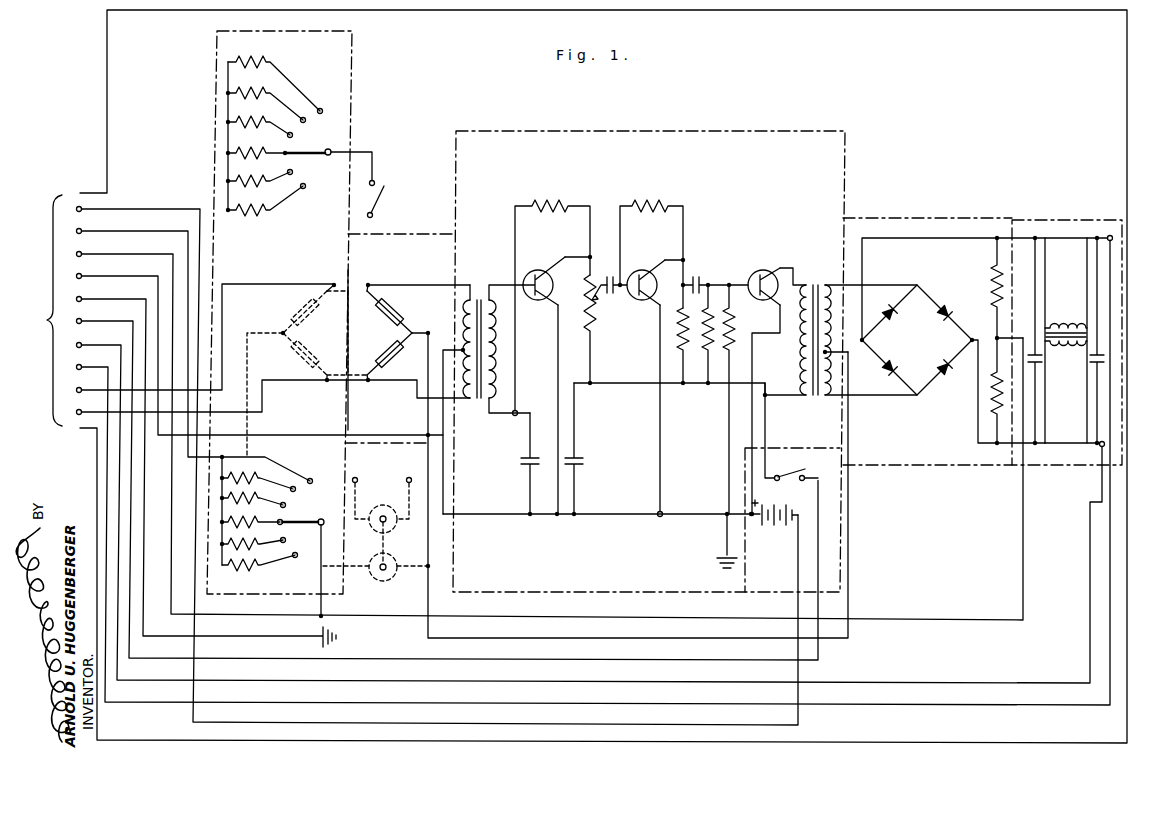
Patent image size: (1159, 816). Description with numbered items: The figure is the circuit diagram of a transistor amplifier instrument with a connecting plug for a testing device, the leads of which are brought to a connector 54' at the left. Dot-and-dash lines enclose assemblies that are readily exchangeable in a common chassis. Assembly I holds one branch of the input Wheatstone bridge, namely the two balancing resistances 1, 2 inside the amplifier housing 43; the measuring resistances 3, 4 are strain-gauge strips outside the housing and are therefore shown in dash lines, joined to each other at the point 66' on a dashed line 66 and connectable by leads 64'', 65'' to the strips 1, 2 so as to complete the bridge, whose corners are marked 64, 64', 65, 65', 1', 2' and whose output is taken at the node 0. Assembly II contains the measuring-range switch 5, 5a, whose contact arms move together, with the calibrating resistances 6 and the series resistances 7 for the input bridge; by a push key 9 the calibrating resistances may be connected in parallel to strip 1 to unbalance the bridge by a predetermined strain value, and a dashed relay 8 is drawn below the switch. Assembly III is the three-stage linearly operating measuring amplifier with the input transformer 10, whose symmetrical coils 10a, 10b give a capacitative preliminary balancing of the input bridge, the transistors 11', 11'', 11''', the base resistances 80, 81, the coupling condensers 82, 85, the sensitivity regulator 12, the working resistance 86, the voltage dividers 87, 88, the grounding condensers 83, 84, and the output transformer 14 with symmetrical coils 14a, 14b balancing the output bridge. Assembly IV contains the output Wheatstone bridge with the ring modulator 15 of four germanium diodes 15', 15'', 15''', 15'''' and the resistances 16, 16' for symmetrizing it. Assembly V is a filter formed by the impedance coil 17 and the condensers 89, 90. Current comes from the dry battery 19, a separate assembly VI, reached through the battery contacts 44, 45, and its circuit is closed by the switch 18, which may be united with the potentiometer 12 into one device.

The amplifier housing 43 is at (107, 68).
The terminal strip 54' is at (55, 310).
The input transformer 10 is at (492, 294).
The push key 9 is at (391, 192).
The terminal 8 / relay 8 is at (387, 596).
The series resistances 7 is at (250, 537).
The calibrating resistances 6 is at (262, 76).
The measuring-range switch 5 is at (298, 517).
The measuring resistance 4 is at (292, 360).
The measuring resistance 3 is at (290, 312).
The balancing resistance 2 is at (237, 341).
The balancing resistance 1 is at (266, 355).
The assembly I is at (442, 234).
The assembly II is at (352, 50).
The assembly III is at (526, 131).
The assembly IV is at (931, 218).
The assembly V is at (1058, 220).
The assembly VI is at (836, 548).
The measuring-range switch 5a is at (306, 152).
The bridge terminal 64 is at (332, 332).
The bridge connection 64' is at (321, 274).
The lead 64'' is at (361, 312).
The bridge terminal 65 is at (358, 398).
The bridge connection 65' is at (325, 391).
The lead 65'' is at (334, 354).
The bridge node 1' is at (418, 274).
The bridge node 2' is at (375, 390).
The bridge output node 0 is at (630, 475).
The connection line 66 is at (260, 382).
The connection point 66' is at (268, 346).
The coil of input transformer 10a is at (478, 291).
The coil of input transformer 10b is at (465, 411).
The transistor 11' is at (556, 375).
The transistor 11'' is at (655, 376).
The transistor 11''' is at (777, 376).
The base resistance 80 is at (552, 206).
The base resistance 81 is at (644, 206).
The coupling condenser 82 is at (602, 276).
The coupling condenser 85 is at (708, 276).
The sensitivity regulator 12 is at (599, 325).
The working resistance 86 is at (679, 350).
The voltage divider 87 is at (703, 350).
The voltage divider 88 is at (725, 350).
The grounding condenser 83 is at (522, 466).
The grounding condenser 84 is at (582, 468).
The output transformer 14 is at (803, 276).
The coil of output transformer 14a is at (814, 284).
The coil of output transformer 14b is at (821, 396).
The ring modulator 15 is at (978, 340).
The germanium diode 15' is at (879, 305).
The germanium diode 15'' is at (955, 305).
The germanium diode 15''' is at (952, 376).
The germanium diode 15'''' is at (875, 376).
The symmetrizing resistance 16 is at (983, 288).
The symmetrizing resistance 16' is at (980, 391).
The impedance coil 17 is at (1067, 312).
The condenser 89 is at (1040, 360).
The condenser 90 is at (1094, 365).
The switch 18 is at (795, 467).
The dry battery 19 is at (782, 500).
The battery contact 44 is at (757, 526).
The battery contact 45 is at (792, 528).